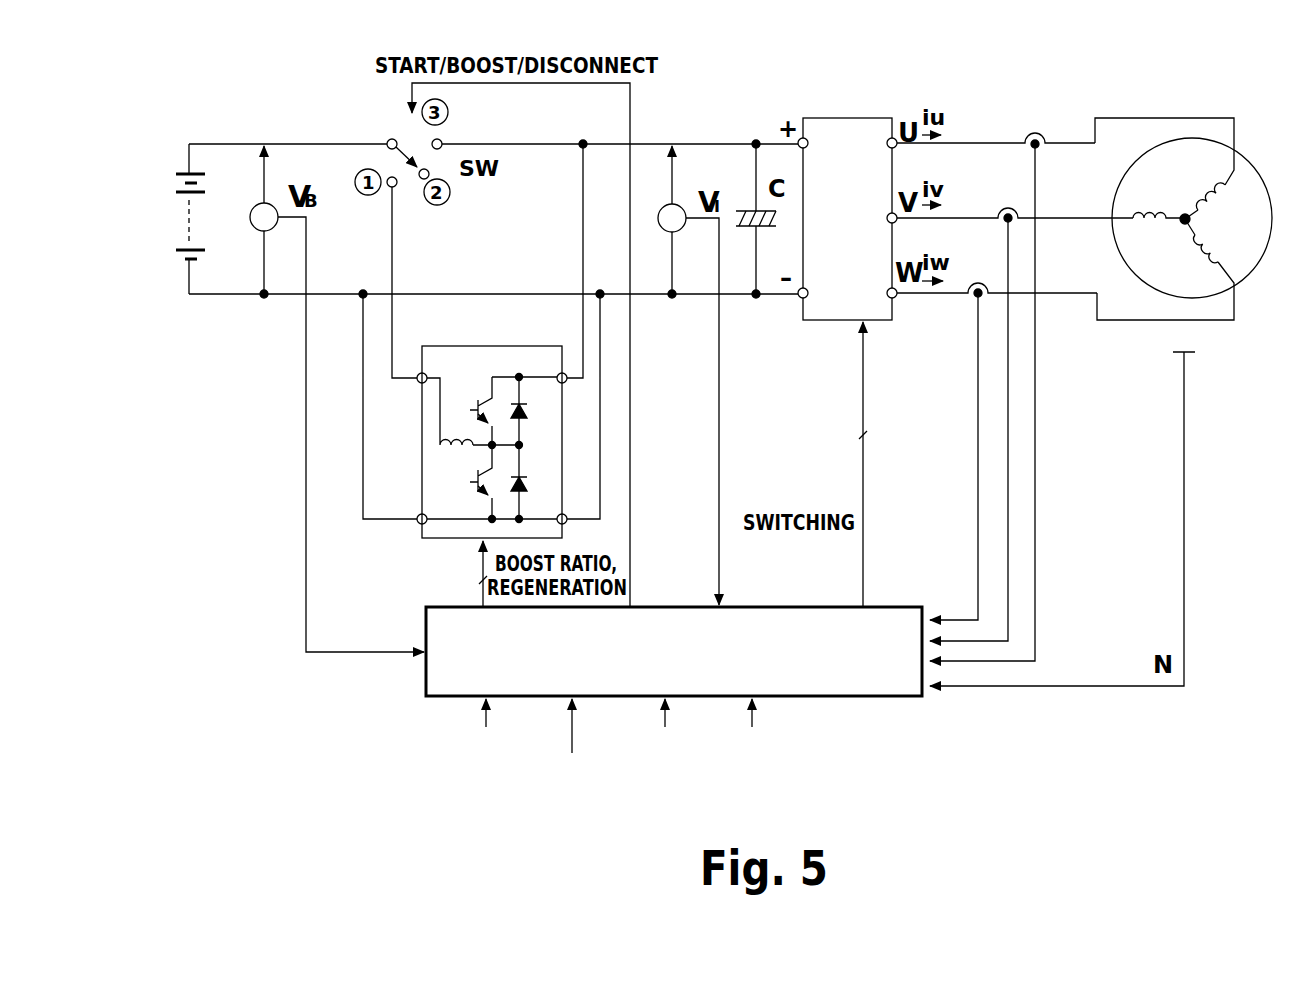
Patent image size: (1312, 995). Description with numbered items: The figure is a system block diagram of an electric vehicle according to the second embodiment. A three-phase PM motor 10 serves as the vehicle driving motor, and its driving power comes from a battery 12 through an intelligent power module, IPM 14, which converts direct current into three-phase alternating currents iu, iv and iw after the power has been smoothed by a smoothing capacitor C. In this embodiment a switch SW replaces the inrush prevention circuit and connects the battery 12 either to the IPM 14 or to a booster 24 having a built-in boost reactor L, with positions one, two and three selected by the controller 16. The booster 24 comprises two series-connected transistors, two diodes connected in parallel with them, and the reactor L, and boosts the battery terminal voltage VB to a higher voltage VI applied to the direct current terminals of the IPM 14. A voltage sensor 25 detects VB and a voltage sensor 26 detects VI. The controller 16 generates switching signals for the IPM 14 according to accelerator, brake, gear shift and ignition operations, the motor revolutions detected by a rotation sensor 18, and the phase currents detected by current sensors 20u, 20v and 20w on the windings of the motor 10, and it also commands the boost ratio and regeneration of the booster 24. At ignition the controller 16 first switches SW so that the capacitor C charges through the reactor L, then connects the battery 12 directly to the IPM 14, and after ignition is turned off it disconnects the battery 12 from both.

The three-phase PM motor 10 is at (1257, 168).
The battery 12 is at (177, 172).
The intelligent power module (IPM) 14 is at (849, 118).
The controller 16 is at (878, 697).
The rotation sensor 18 is at (1200, 362).
The current sensor 20u is at (1050, 127).
The current sensor 20v is at (1010, 206).
The current sensor 20w is at (980, 283).
The booster 24 is at (460, 346).
The voltage sensor 25 is at (258, 207).
The voltage sensor 26 is at (661, 208).